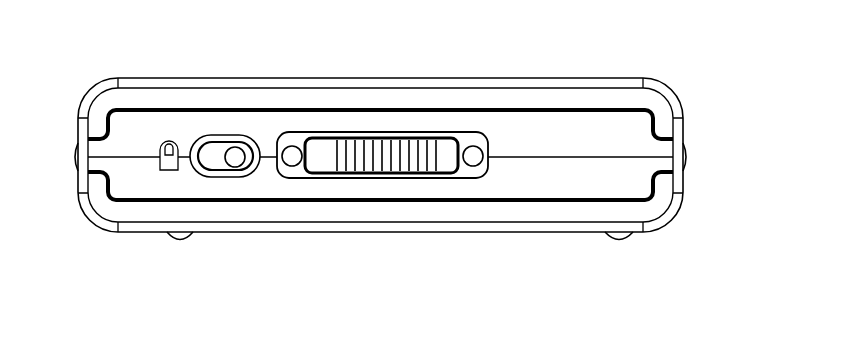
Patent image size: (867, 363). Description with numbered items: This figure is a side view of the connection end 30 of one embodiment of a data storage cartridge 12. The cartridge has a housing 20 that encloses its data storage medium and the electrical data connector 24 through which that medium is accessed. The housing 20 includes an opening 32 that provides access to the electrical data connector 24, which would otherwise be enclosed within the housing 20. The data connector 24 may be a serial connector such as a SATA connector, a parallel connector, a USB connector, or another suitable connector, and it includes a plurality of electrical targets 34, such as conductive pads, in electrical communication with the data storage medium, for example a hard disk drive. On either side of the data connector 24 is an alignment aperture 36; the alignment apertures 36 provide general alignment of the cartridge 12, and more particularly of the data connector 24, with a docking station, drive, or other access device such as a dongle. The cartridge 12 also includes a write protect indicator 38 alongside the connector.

The data storage cartridge 12 is at (112, 50).
The housing 20 is at (638, 85).
The connection end 30 is at (638, 128).
The write protect indicator 38 is at (234, 158).
The electrical data connector 24 is at (417, 133).
The opening 32 is at (322, 146).
The electrical targets 34 is at (358, 152).
The alignment apertures 36 is at (292, 160).